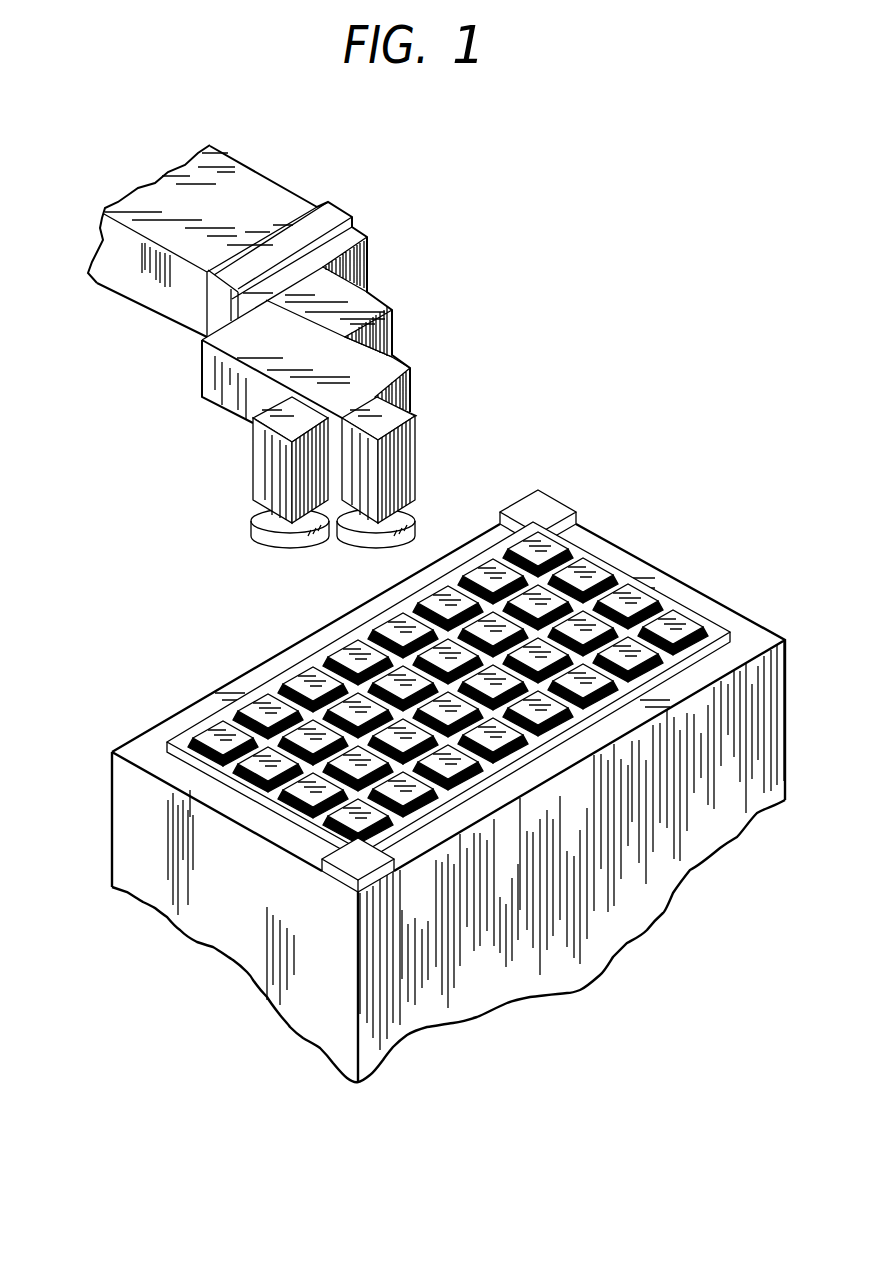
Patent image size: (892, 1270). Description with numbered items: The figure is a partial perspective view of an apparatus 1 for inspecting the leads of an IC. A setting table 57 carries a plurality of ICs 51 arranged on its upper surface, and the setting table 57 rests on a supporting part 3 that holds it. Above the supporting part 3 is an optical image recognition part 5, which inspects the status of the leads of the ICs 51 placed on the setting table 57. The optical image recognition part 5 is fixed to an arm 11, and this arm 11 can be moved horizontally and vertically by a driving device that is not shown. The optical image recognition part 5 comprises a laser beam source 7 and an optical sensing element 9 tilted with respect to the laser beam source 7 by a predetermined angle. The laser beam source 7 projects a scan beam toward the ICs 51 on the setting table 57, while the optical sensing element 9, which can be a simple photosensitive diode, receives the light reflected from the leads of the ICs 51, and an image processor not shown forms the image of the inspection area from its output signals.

The die bonding apparatus 1 is at (531, 275).
The supporting part 3 is at (603, 547).
The optical image recognition part 5 is at (114, 528).
The laser beam source 7 is at (355, 462).
The optical sensing element 9 is at (253, 503).
The arm 11 is at (286, 189).
The IC 51 is at (681, 622).
The setting table 57 is at (178, 744).